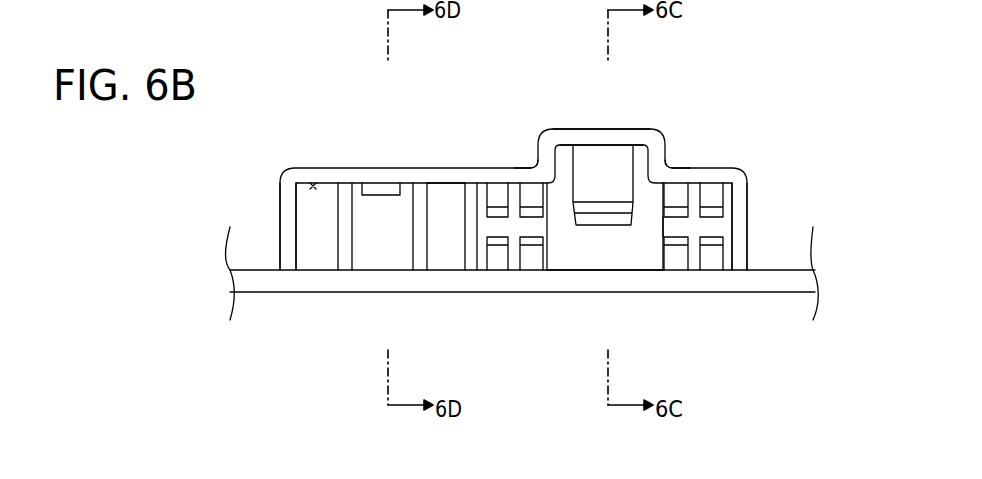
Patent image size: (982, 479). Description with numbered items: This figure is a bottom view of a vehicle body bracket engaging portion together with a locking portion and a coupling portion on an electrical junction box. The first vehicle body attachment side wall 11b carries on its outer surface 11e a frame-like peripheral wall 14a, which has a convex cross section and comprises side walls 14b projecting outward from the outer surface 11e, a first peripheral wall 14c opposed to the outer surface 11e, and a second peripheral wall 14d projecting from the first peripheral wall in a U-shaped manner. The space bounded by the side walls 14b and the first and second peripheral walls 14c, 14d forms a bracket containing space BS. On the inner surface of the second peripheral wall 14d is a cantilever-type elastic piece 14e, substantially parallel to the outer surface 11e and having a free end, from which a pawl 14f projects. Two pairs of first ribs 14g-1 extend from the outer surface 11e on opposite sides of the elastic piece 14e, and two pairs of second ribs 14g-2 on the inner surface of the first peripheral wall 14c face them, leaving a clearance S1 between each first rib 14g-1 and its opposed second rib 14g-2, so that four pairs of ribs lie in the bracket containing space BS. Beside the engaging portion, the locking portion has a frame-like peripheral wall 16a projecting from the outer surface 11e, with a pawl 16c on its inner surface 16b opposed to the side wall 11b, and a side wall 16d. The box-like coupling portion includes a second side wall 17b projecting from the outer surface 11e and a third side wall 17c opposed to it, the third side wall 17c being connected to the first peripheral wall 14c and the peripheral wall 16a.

The first vehicle body attachment side wall 11b is at (783, 283).
The outer surface 11e is at (787, 268).
The peripheral wall 14a is at (660, 128).
The side wall 14b is at (740, 240).
The first peripheral wall 14c is at (533, 170).
The second peripheral wall 14d is at (640, 135).
The elastic piece 14e is at (608, 162).
The pawl 14f is at (588, 218).
The first ribs 14g-1 is at (526, 250).
The second ribs 14g-2 is at (532, 197).
The peripheral wall 16a is at (315, 181).
The inner surface 16b is at (352, 185).
The pawl 16c is at (385, 190).
The side wall 16d is at (287, 205).
The second side wall 17b is at (417, 238).
The third side wall 17c is at (447, 183).
The clearance S1 is at (715, 223).
The bracket containing space BS is at (597, 245).